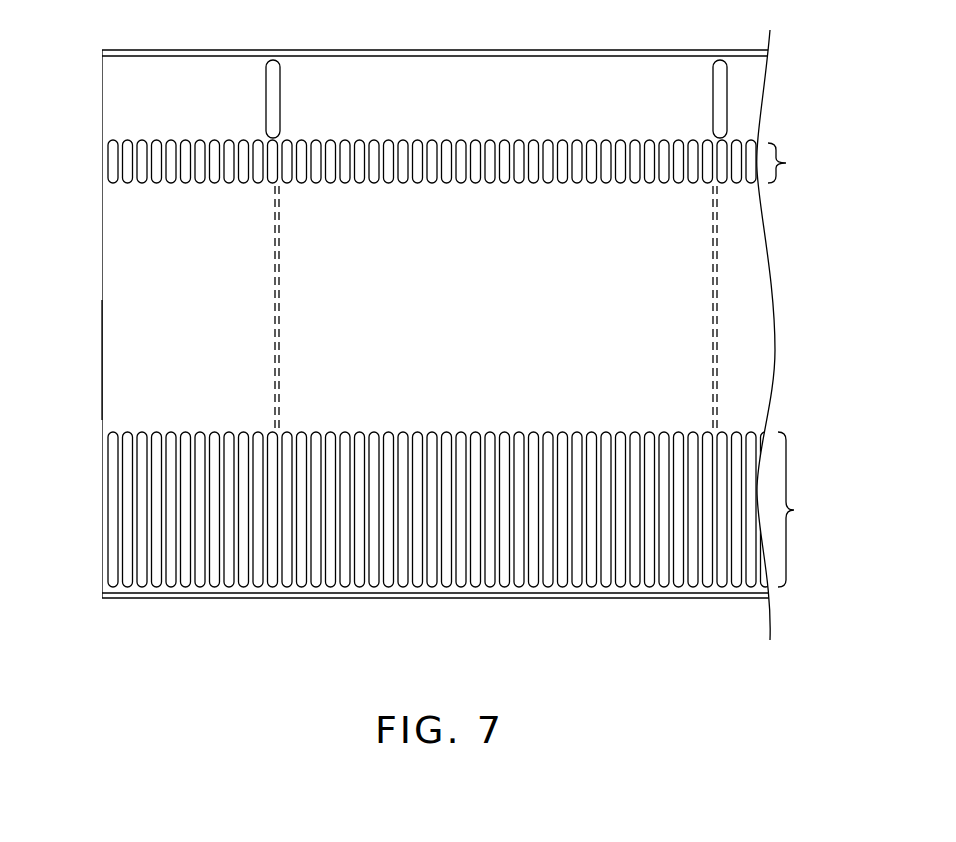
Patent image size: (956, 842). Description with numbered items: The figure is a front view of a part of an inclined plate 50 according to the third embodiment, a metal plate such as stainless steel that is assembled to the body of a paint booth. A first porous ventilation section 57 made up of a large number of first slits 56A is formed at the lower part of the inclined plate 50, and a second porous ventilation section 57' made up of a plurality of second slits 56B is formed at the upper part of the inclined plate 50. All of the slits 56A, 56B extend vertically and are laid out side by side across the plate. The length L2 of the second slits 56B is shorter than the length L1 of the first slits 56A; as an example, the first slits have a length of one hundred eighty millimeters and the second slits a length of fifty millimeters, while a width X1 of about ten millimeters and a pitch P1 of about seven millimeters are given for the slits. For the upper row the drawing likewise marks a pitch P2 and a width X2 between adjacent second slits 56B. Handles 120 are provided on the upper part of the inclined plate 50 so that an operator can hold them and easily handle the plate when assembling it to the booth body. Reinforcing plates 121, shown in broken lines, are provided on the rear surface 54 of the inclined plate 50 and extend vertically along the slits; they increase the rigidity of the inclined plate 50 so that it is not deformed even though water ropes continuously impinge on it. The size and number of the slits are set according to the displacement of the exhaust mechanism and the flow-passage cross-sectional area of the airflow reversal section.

The inclined plate 50 is at (474, 72).
The rear surface 54 is at (175, 360).
The first slits 56A is at (229, 584).
The second slits 56B is at (229, 180).
The first porous ventilation section 57 is at (801, 509).
The second porous ventilation section 57' is at (794, 163).
The handles 120 is at (266, 116).
The reinforcing plates 121 is at (275, 386).
The length of first slits L1 is at (102, 587).
The length of second slits L2 is at (102, 183).
The pitch of slits P1 is at (428, 588).
The pitch of second slits P2 is at (428, 192).
The width of slits X1 is at (562, 588).
The width of second slits X2 is at (562, 192).